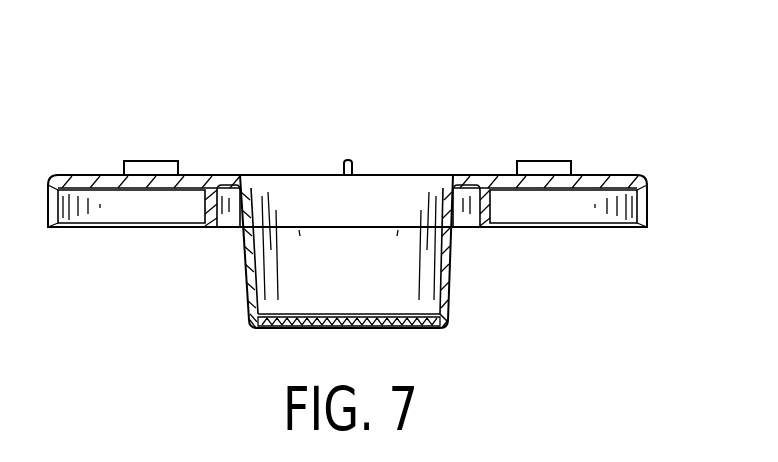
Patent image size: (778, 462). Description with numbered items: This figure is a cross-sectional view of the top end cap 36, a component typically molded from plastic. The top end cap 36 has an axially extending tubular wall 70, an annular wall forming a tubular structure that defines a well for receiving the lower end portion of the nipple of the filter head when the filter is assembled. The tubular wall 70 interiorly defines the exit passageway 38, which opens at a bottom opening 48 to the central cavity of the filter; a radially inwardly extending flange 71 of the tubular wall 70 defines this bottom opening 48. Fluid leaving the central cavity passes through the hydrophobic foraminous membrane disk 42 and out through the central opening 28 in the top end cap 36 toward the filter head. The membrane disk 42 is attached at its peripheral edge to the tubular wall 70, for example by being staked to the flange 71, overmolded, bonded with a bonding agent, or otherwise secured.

The top end cap 36 is at (580, 124).
The central opening 28 is at (308, 188).
The exit passageway 38 is at (395, 208).
The hydrophobic foraminous membrane disk 42 is at (362, 314).
The bottom opening 48 is at (287, 327).
The tubular wall 70 is at (448, 265).
The flange 71 is at (430, 325).